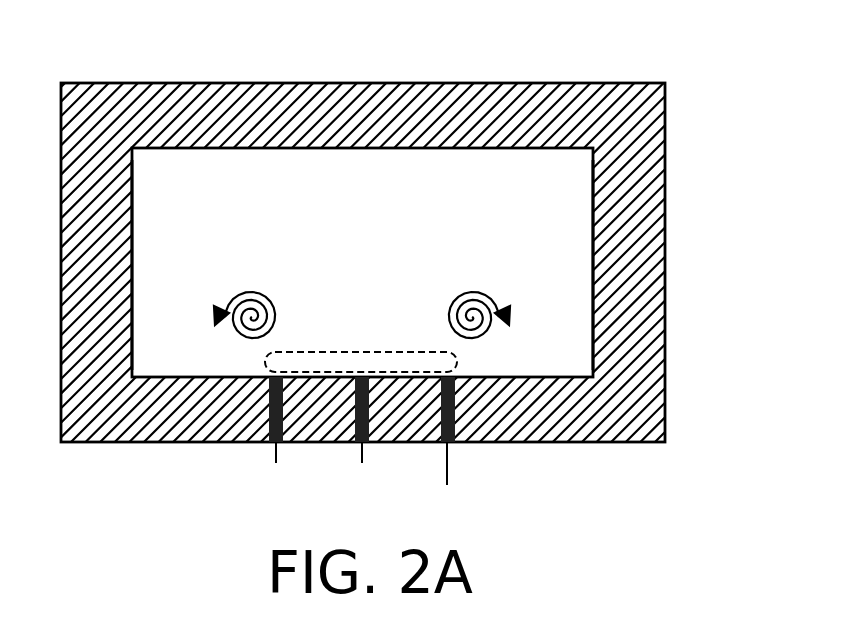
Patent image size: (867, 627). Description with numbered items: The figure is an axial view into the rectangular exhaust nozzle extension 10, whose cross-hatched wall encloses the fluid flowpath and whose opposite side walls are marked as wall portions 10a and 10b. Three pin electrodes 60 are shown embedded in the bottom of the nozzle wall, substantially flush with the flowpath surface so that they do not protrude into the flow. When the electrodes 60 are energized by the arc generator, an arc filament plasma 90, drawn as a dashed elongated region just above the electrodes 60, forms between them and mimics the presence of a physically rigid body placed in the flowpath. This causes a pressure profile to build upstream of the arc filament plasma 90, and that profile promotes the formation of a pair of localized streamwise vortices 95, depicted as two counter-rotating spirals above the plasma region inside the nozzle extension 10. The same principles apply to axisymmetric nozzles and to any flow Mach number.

The exhaust nozzle extension 10 is at (318, 82).
The first side wall of chamber 10a is at (132, 215).
The second side wall of chamber 10b is at (593, 240).
The streamwise vortices 95 is at (252, 292).
The arc filament plasma 90 is at (445, 362).
The pin electrodes 60 is at (462, 455).